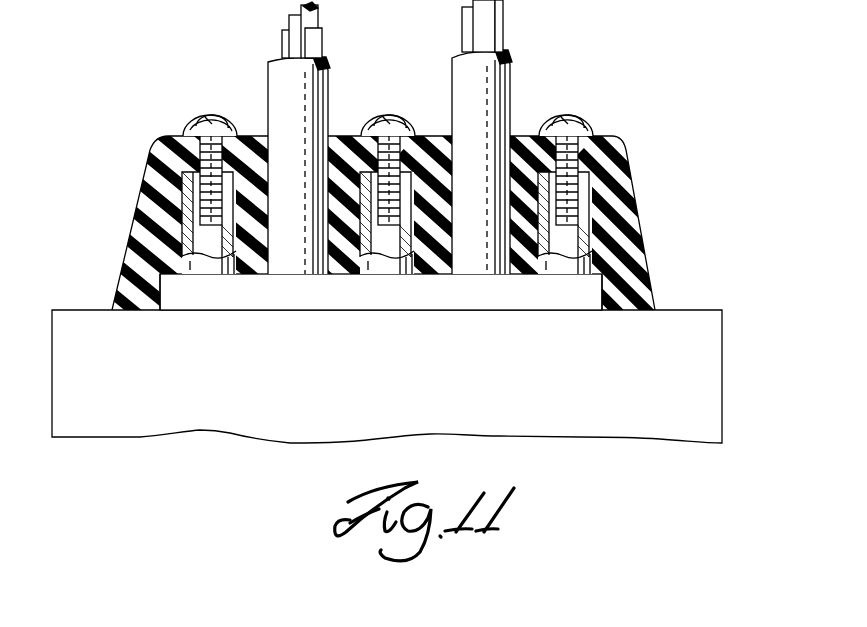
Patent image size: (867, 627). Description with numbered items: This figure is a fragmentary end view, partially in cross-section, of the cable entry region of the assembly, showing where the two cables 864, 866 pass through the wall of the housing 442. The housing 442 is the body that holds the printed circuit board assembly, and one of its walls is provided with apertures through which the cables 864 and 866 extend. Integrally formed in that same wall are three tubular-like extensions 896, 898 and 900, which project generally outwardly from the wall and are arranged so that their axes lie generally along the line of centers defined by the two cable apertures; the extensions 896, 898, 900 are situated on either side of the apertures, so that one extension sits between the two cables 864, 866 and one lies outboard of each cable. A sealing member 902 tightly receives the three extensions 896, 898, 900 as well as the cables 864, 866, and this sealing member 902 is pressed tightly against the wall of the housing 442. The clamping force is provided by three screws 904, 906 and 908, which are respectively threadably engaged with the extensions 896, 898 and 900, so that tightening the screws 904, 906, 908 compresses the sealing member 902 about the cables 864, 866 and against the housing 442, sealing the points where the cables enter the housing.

The housing 442 is at (718, 375).
The cable 864 is at (269, 62).
The cable 866 is at (509, 72).
The tubular-like extension 896 is at (228, 190).
The tubular-like extension 898 is at (416, 205).
The tubular-like extension 900 is at (598, 223).
The sealing member 902 is at (635, 188).
The screw 904 is at (214, 114).
The screw 906 is at (393, 115).
The screw 908 is at (582, 118).